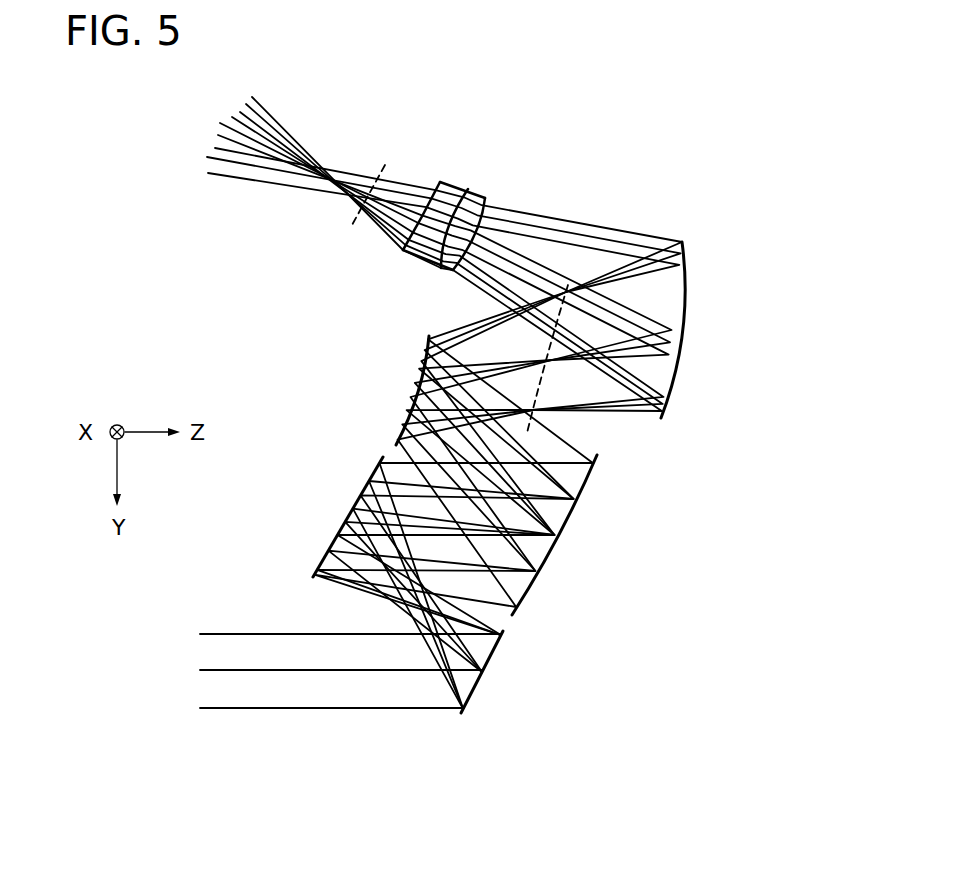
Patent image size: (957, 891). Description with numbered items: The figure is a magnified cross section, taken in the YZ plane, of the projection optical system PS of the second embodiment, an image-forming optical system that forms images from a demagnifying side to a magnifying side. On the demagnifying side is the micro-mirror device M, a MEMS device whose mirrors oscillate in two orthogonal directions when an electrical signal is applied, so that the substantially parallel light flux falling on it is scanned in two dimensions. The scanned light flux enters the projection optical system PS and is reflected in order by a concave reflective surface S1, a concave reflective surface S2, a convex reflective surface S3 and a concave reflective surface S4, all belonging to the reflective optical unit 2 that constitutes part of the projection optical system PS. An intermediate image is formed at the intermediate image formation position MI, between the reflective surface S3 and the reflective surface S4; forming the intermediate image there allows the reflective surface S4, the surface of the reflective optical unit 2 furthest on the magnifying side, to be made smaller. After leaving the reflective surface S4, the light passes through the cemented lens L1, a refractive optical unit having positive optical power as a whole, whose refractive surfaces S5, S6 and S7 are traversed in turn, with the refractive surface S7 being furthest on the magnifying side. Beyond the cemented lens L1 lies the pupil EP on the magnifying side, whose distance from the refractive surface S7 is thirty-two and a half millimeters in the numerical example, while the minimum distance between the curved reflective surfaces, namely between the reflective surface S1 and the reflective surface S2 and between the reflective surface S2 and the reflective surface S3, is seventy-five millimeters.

The projection optical system PS is at (658, 172).
The micro-mirror device M is at (468, 688).
The concave reflective surface S1 is at (365, 485).
The concave reflective surface S2 is at (577, 563).
The convex reflective surface S3 is at (424, 366).
The concave reflective surface S4 is at (680, 352).
The reflective optical unit 2 is at (733, 330).
The refractive surface S5 is at (487, 200).
The refractive surface S6 is at (467, 191).
The refractive surface S7 is at (438, 181).
The cemented lens L1 is at (428, 185).
The intermediate image formation position MI is at (557, 370).
The pupil EP is at (391, 156).